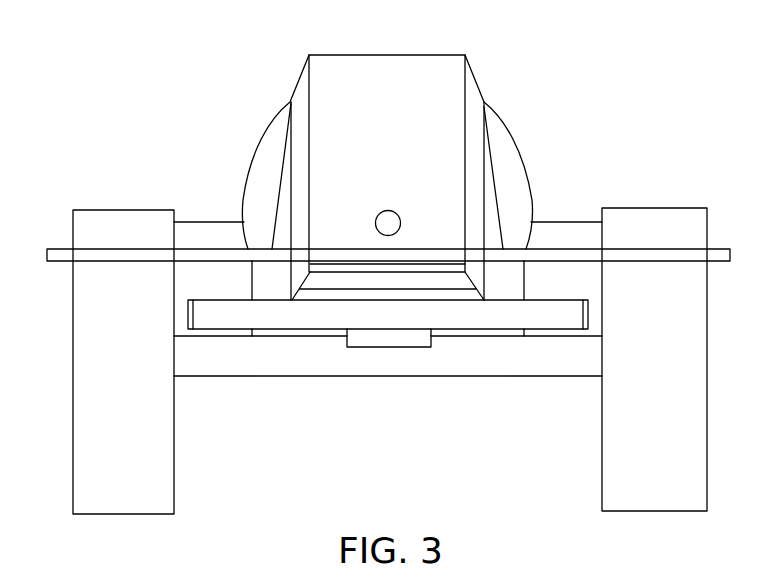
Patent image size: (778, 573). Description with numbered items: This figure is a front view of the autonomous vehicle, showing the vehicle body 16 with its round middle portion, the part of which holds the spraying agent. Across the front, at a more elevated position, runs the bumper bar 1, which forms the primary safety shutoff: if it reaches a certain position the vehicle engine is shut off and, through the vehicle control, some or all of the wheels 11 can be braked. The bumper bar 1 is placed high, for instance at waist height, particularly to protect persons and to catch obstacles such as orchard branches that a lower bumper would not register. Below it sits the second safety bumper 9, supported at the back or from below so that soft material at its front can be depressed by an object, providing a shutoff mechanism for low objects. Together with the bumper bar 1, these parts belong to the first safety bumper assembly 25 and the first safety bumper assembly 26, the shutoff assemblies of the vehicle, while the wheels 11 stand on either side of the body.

The bumper bar 1 is at (61, 250).
The second safety bumper 9 is at (297, 319).
The wheels 11 is at (693, 338).
The vehicle body 16 is at (505, 148).
The first safety bumper assembly 25 is at (562, 188).
The first safety bumper assembly 26 is at (489, 339).